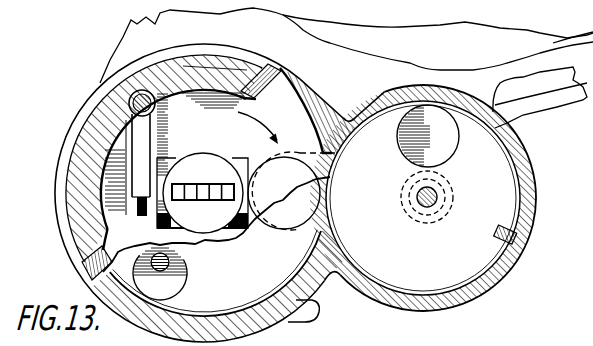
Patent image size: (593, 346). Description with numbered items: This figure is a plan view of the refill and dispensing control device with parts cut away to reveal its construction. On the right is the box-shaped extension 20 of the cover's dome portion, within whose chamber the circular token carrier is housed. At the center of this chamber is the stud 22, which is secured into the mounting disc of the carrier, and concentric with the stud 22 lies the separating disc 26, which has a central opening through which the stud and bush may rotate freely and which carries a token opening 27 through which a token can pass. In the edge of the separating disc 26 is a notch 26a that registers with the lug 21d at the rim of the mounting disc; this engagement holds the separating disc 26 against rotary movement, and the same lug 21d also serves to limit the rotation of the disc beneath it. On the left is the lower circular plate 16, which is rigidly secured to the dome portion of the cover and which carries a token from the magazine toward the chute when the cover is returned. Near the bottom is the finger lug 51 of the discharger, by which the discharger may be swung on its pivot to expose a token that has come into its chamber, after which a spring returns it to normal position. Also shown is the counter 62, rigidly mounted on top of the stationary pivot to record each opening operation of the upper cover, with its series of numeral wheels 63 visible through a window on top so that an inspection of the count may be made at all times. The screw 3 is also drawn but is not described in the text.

The screw 3 is at (160, 274).
The lower circular plate 16 is at (127, 145).
The box-shaped extension 20 is at (468, 300).
The lug 21d is at (530, 253).
The stud 22 is at (436, 194).
The separating disc 26 is at (507, 205).
The notch 26a is at (506, 234).
The token opening 27 is at (443, 132).
The finger lug 51 is at (318, 310).
The counter 62 is at (213, 165).
The numeral wheels 63 is at (191, 182).